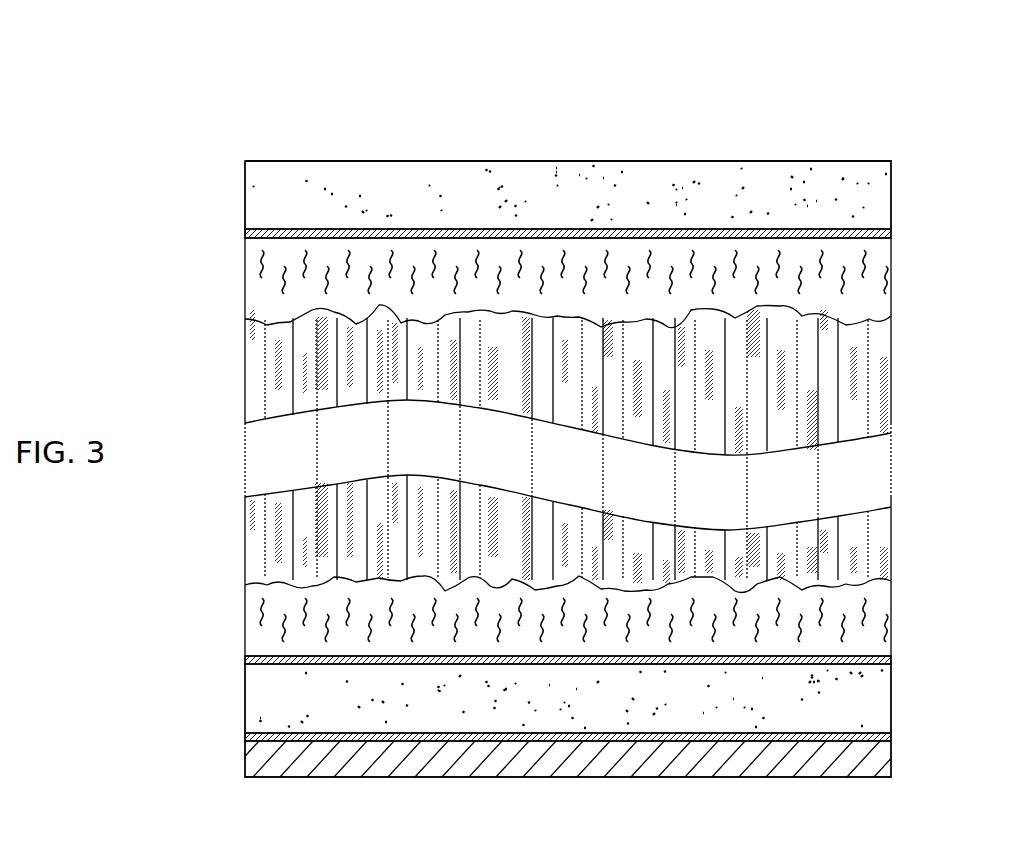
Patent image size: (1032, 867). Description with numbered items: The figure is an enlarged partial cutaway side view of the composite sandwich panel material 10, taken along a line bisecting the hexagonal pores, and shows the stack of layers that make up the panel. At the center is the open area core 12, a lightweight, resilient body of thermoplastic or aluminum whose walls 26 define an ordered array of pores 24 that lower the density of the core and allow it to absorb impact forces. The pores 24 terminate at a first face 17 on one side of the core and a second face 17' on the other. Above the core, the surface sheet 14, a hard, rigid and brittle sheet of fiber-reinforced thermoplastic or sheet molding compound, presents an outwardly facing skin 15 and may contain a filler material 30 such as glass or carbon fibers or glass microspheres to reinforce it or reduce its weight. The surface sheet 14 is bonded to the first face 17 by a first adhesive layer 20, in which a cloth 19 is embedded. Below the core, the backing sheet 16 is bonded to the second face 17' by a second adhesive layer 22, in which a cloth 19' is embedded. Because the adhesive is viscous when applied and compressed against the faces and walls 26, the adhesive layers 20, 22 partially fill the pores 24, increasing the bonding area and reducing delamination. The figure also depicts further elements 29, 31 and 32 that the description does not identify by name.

The composite sandwich panel material 10 is at (767, 116).
The open area core 12 is at (893, 370).
The surface sheet 14 is at (893, 195).
The skin 15 is at (845, 161).
The backing sheet 16 is at (893, 697).
The first face 17 is at (534, 234).
The second face 17' is at (530, 670).
The cloth 19 is at (534, 259).
The cloth 19' is at (530, 644).
The first adhesive layer 20 is at (893, 272).
The second adhesive layer 22 is at (893, 618).
The pores 24 is at (345, 352).
The walls 26 is at (345, 527).
The base layer 29 is at (245, 752).
The filler material 30 is at (260, 191).
The thin layer 31 is at (893, 737).
The fibers 32 is at (260, 603).